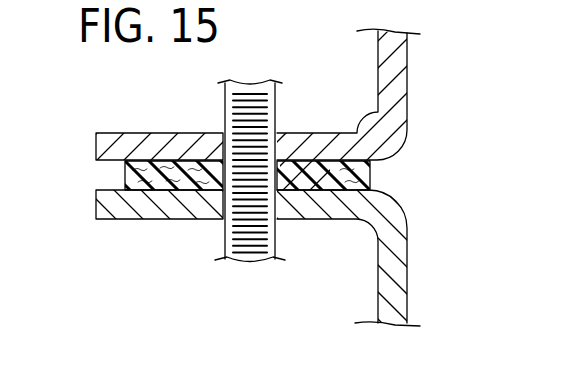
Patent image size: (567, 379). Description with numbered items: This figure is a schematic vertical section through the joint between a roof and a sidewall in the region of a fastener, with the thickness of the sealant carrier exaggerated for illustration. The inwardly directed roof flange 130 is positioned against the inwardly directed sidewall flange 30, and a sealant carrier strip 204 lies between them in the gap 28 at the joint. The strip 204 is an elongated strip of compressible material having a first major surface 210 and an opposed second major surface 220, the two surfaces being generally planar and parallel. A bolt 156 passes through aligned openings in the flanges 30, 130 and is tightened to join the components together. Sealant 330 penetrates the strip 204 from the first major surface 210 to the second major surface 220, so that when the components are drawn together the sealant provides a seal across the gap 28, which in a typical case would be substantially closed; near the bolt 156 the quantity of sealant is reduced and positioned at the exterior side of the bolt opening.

The inwardly directed roof flange 130 is at (152, 142).
The sealant carrier strip 204 is at (114, 173).
The inwardly directed sidewall flange 30 is at (148, 216).
The bolt 156 is at (224, 238).
The sealant 330 is at (303, 167).
The first major surface 210 is at (347, 160).
The second major surface 220 is at (345, 193).
The gap 28 is at (283, 189).